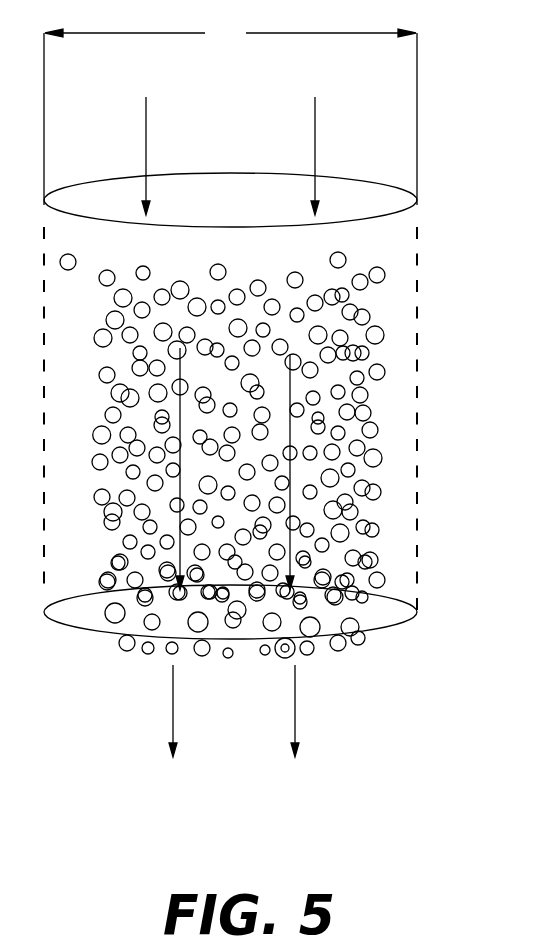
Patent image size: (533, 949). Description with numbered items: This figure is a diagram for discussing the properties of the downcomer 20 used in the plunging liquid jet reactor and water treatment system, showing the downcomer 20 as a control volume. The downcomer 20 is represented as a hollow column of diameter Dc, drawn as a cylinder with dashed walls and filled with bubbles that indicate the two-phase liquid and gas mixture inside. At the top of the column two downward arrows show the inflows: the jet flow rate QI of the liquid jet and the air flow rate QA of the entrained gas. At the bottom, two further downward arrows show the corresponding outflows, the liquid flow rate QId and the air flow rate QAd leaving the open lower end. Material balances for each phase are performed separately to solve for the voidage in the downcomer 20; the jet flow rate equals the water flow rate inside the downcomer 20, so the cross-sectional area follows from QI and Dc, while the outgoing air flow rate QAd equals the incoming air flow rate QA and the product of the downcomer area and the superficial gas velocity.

The downcomer 20 is at (427, 212).
The downcomer diameter Dc is at (230, 36).
The jet flow rate QI is at (148, 133).
The air flow rate QA is at (313, 133).
The liquid outflow rate from downcomer QId is at (172, 734).
The air outflow rate from downcomer QAd is at (297, 734).